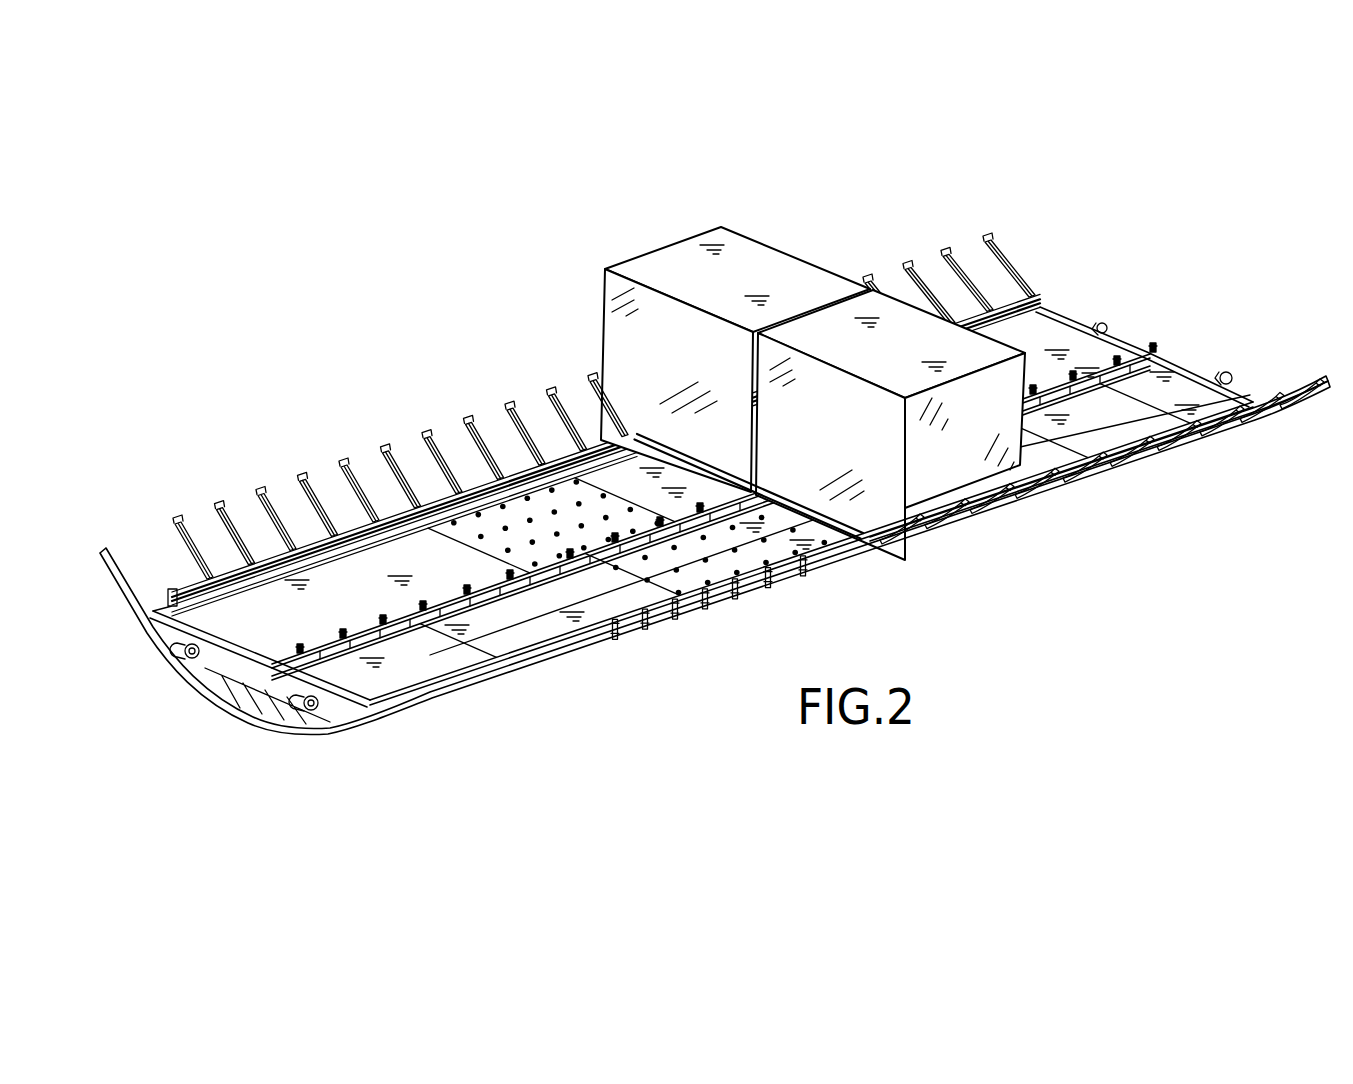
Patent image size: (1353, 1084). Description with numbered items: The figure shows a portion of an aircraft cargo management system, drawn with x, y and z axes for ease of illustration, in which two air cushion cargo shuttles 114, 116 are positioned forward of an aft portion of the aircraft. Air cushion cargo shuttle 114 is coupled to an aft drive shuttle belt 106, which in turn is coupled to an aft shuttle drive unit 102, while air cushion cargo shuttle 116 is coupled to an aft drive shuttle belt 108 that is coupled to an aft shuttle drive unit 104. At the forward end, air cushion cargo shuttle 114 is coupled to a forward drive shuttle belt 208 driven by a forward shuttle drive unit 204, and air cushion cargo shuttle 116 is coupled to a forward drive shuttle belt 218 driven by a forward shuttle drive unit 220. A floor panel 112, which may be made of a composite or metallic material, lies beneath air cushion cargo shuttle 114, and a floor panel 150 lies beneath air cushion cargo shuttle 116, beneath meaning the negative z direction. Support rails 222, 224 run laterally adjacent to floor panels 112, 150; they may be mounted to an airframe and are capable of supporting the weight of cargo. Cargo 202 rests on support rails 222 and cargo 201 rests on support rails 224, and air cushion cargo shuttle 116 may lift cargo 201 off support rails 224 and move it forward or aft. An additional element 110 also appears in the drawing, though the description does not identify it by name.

The aft shuttle drive unit 102 is at (318, 712).
The aft shuttle drive unit 104 is at (190, 660).
The aft drive shuttle belt 106 is at (578, 650).
The aft drive shuttle belt 108 is at (382, 560).
The cross rail 110 is at (872, 543).
The floor panel 112 is at (502, 658).
The air cushion cargo shuttle 114 is at (705, 612).
The air cushion cargo shuttle 116 is at (562, 495).
The floor panel 150 is at (345, 505).
The cargo 201 is at (665, 277).
The cargo 202 is at (897, 332).
The forward shuttle drive unit 204 is at (1232, 374).
The forward drive shuttle belt 208 is at (1082, 455).
The forward drive shuttle belt 218 is at (1030, 296).
The forward shuttle drive unit 220 is at (1102, 322).
The support rails 222 is at (805, 558).
The support rails 224 is at (485, 580).